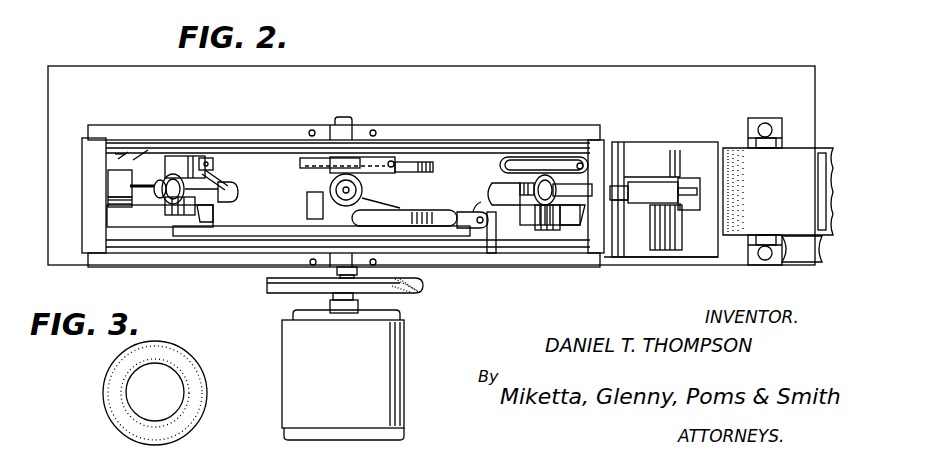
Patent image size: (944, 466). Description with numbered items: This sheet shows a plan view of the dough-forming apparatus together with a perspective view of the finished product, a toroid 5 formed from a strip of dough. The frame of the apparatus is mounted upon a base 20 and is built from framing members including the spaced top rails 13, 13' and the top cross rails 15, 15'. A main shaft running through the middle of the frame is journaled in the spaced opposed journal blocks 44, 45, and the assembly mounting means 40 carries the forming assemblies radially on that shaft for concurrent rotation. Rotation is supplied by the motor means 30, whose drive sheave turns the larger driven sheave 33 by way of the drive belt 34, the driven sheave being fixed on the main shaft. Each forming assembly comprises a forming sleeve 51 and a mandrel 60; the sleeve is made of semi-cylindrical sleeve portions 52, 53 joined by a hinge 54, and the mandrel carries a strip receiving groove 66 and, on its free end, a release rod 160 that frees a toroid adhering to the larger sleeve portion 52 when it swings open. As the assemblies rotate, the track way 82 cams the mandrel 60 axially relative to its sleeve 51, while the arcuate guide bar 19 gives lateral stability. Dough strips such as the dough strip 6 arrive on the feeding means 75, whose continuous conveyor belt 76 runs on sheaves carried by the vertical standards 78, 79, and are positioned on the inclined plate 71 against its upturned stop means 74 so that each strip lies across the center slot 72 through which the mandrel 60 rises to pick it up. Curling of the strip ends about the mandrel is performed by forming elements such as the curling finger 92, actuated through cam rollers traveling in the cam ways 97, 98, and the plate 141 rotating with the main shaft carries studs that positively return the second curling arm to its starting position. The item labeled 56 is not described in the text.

In FIG. 2, the base 20 is at (660, 68).
In FIG. 2, the top rail 13' is at (344, 127).
In FIG. 2, the top rail 13 is at (344, 265).
In FIG. 2, the top cross rail 15 is at (62, 195).
In FIG. 2, the top cross rail 15' is at (618, 185).
In FIG. 2, the journal block 44 is at (372, 128).
In FIG. 2, the guide bar 19 is at (430, 150).
In FIG. 2, the forming sleeve 51 is at (108, 194).
In FIG. 2, the mandrel 60 is at (175, 182).
In FIG. 2, the semi-cylindrical sleeve portion 52 is at (205, 192).
In FIG. 2, the support block 56 is at (315, 206).
In FIG. 2, the track way 82 is at (256, 234).
In FIG. 2, the cam way 97 is at (518, 160).
In FIG. 2, the hinge 54 is at (505, 188).
In FIG. 2, the semi-cylindrical sleeve portion 53 is at (212, 224).
In FIG. 2, the cam way 98 is at (418, 211).
In FIG. 2, the curling finger 92 is at (470, 210).
In FIG. 2, the plate 141 is at (430, 237).
In FIG. 2, the plate 71 is at (668, 150).
In FIG. 2, the center slot 72 is at (688, 182).
In FIG. 2, the strip receiving groove 66 is at (626, 200).
In FIG. 2, the release rod 160 is at (680, 208).
In FIG. 2, the stop means 74 is at (622, 255).
In FIG. 2, the feeding means 75 is at (798, 162).
In FIG. 2, the dough strip 6 is at (828, 155).
In FIG. 2, the vertical standard 79 is at (770, 118).
In FIG. 2, the vertical standard 78 is at (778, 266).
In FIG. 2, the conveyor belt 76 is at (812, 245).
In FIG. 2, the journal block 45 is at (312, 265).
In FIG. 2, the drive belt 34 is at (380, 290).
In FIG. 2, the assembly mounting means 40 is at (432, 289).
In FIG. 2, the driven sheave 33 is at (385, 300).
In FIG. 2, the motor means 30 is at (410, 396).
In FIG. 3, the toroid 5 is at (204, 354).